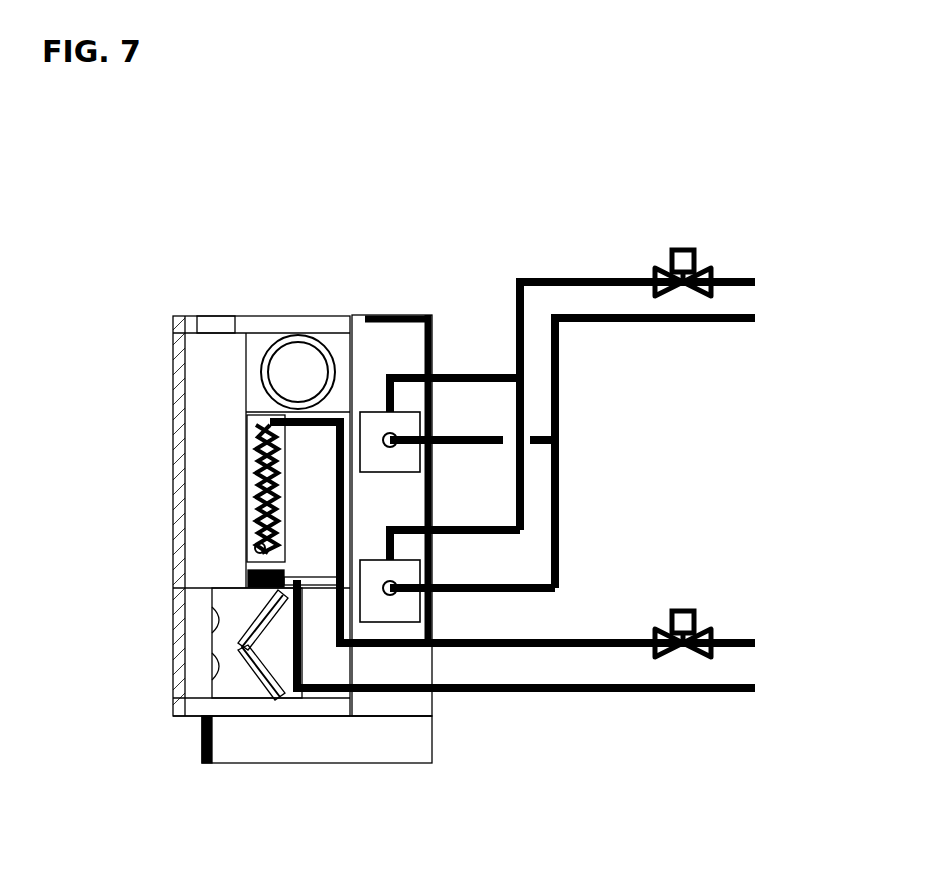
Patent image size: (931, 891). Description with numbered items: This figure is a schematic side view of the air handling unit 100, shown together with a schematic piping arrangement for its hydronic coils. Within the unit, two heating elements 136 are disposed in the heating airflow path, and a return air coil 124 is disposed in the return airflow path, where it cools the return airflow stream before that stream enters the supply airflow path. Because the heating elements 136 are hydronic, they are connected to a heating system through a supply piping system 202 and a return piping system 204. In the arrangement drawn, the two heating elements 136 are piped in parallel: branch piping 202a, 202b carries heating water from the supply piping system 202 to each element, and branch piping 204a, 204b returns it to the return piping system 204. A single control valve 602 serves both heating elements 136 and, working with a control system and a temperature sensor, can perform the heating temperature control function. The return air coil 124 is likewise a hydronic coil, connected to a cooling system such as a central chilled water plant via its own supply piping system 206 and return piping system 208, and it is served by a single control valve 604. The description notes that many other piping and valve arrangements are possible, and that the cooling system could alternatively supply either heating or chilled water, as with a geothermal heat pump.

The dishwasher appliance 100 is at (308, 290).
The return air coil 124 is at (262, 530).
The heating elements 136 is at (400, 428).
The supply piping system 202 is at (620, 322).
The piping 202a is at (450, 447).
The piping 202b is at (460, 592).
The return piping system 204 is at (735, 277).
The piping 204a is at (497, 370).
The piping 204b is at (467, 527).
The supply piping system 206 is at (607, 690).
The return piping system 208 is at (732, 638).
The control valve 602 is at (660, 262).
The control valve 604 is at (680, 612).